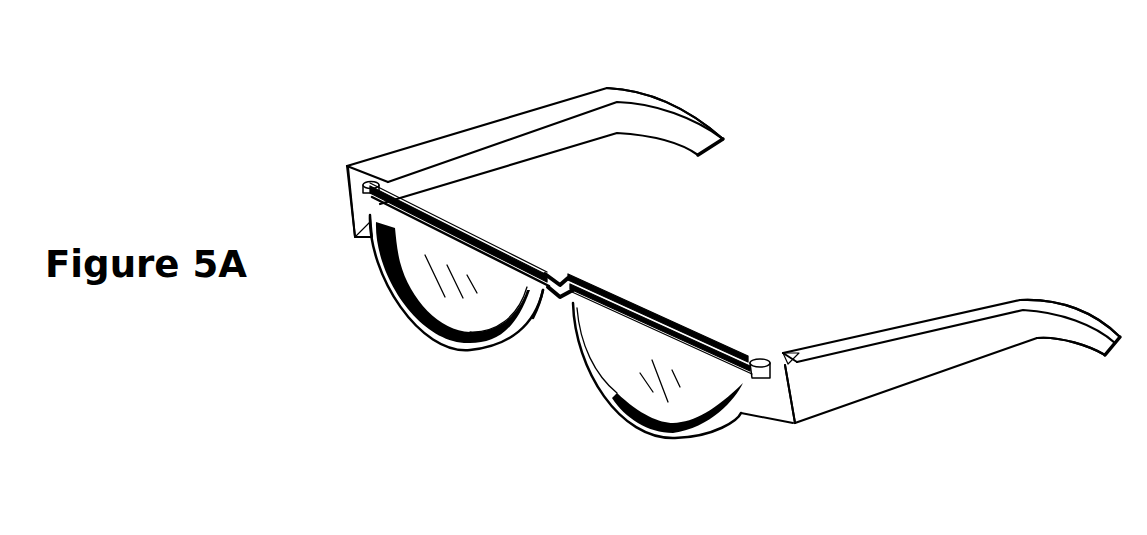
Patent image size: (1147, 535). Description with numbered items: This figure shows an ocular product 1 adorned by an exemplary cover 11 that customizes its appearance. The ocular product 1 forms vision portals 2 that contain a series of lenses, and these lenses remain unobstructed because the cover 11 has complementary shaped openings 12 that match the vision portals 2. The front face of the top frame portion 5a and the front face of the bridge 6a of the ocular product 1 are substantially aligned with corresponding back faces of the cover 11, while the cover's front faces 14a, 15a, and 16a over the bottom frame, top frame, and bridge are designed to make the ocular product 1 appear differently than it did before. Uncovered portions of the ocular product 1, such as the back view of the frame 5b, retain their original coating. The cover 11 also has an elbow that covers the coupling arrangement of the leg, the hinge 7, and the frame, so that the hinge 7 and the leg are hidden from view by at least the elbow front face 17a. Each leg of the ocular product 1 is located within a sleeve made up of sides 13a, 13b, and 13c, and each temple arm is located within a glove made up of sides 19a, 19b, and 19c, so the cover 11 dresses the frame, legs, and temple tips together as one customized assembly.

The ocular product 1 is at (713, 340).
The vision portals 2 is at (564, 331).
The front face of top frame portion 5a is at (603, 297).
The back view of frame 5b is at (656, 300).
The front face of bridge 6a is at (550, 272).
The hinge 7 is at (370, 176).
The cover 11 is at (413, 323).
The complementary shaped openings 12 is at (613, 332).
The side of sleeve 13a is at (950, 380).
The side of sleeve 13b is at (551, 153).
The side of sleeve 13c is at (871, 338).
The front face of cover bottom portion 14a is at (603, 407).
The front face of cover top portion 15a is at (421, 234).
The front face of cover bridge portion 16a is at (548, 304).
The elbow front face 17a is at (352, 203).
The side of glove 19a is at (1078, 334).
The side of glove 19b is at (690, 126).
The side of glove 19c is at (645, 100).